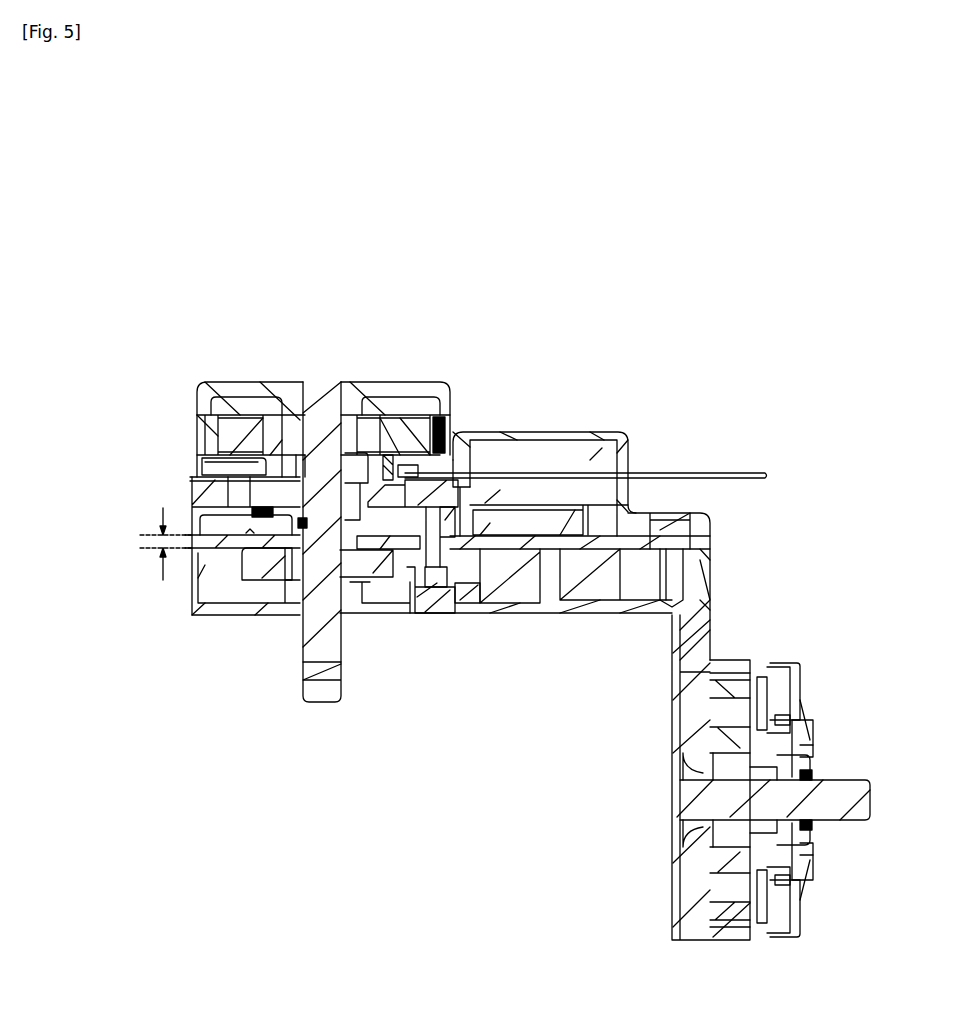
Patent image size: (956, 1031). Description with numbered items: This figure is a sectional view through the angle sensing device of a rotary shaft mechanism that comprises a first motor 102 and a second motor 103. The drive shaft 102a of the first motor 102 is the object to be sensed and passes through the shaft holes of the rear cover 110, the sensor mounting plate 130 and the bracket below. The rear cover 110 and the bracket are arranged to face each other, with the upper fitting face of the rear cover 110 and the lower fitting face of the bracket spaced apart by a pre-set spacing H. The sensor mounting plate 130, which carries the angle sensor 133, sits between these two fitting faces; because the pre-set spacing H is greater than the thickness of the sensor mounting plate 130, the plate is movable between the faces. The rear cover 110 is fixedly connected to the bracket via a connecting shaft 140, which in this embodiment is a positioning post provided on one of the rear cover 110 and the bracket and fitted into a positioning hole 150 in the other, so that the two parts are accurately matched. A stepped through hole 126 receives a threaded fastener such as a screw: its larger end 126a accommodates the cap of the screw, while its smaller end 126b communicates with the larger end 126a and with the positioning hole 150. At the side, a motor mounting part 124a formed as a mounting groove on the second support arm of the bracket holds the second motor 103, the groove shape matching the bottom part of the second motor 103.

The first motor 102 is at (353, 395).
The drive shaft 102a is at (323, 688).
The second motor 103 is at (810, 795).
The rear cover 110 is at (563, 432).
The motor mounting part 124a is at (668, 682).
The through hole 126 is at (433, 638).
The larger end 126a is at (461, 615).
The smaller end 126b is at (428, 582).
The sensor mounting plate 130 is at (520, 560).
The angle sensor 133 is at (255, 567).
The connecting shaft 140 is at (458, 498).
The positioning hole 150 is at (457, 580).
The pre-set spacing H is at (153, 544).